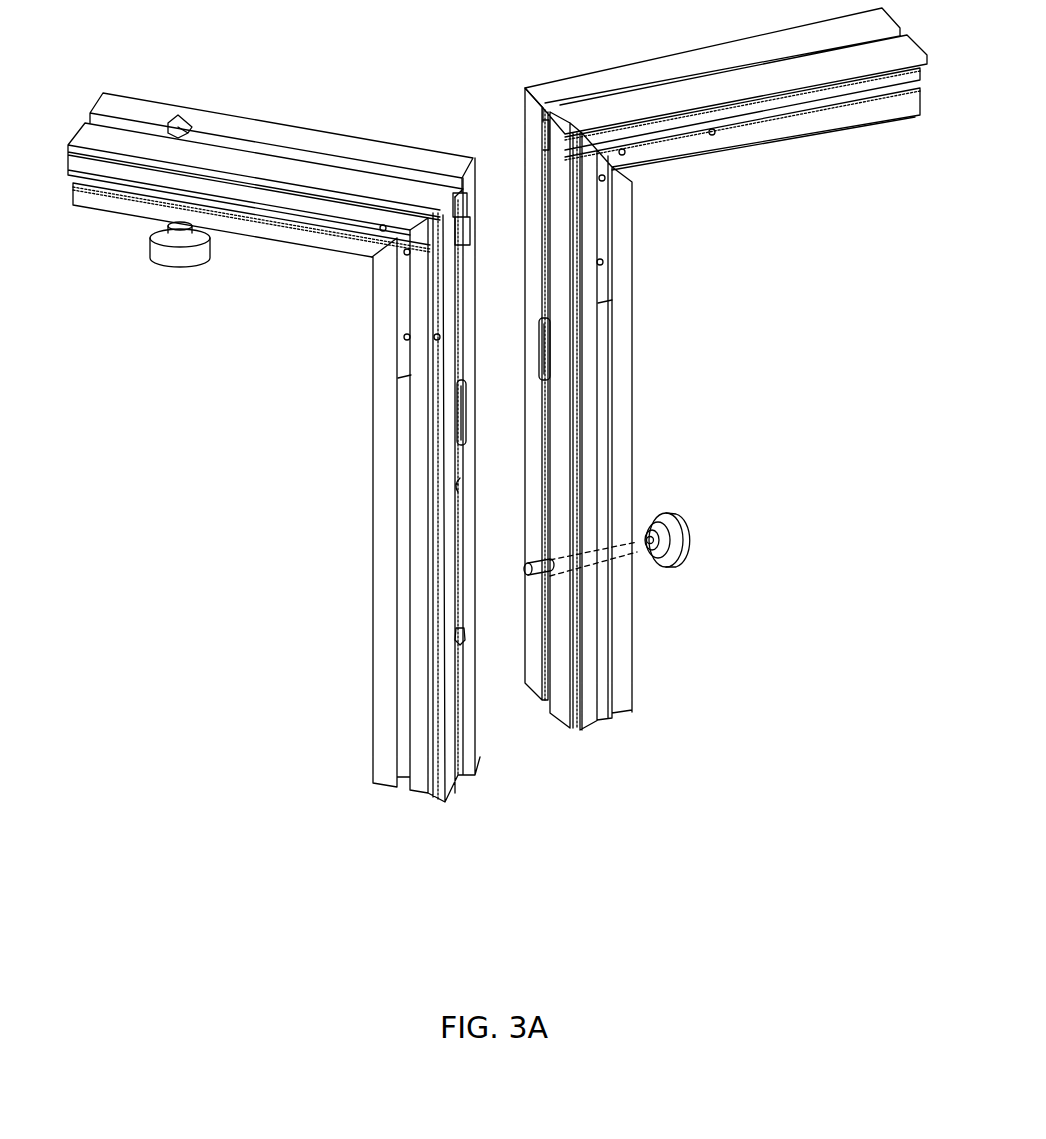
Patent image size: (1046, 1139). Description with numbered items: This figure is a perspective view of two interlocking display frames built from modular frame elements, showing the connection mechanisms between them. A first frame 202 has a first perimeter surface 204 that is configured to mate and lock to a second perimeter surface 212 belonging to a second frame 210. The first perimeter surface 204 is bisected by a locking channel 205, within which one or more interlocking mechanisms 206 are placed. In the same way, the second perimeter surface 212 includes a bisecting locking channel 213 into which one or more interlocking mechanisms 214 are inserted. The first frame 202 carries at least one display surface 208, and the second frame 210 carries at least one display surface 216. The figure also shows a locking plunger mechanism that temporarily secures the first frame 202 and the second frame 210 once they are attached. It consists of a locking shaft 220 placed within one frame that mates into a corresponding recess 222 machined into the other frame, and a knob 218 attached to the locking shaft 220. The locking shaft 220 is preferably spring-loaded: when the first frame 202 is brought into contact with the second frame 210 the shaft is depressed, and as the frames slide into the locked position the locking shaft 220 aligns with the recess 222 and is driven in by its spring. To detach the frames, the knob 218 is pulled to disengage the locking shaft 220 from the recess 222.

The first frame 202 is at (172, 112).
The first perimeter surface 204 is at (463, 480).
The locking channel 205 is at (458, 486).
The interlocking mechanisms 206 is at (465, 425).
The display surface 208 is at (380, 445).
The second frame 210 is at (640, 68).
The second perimeter surface 212 is at (532, 108).
The locking channel 213 is at (545, 198).
The interlocking mechanisms 214 is at (540, 341).
The display surface 216 is at (740, 148).
The knob 218 is at (712, 505).
The locking shaft 220 is at (526, 572).
The recess 222 is at (465, 642).